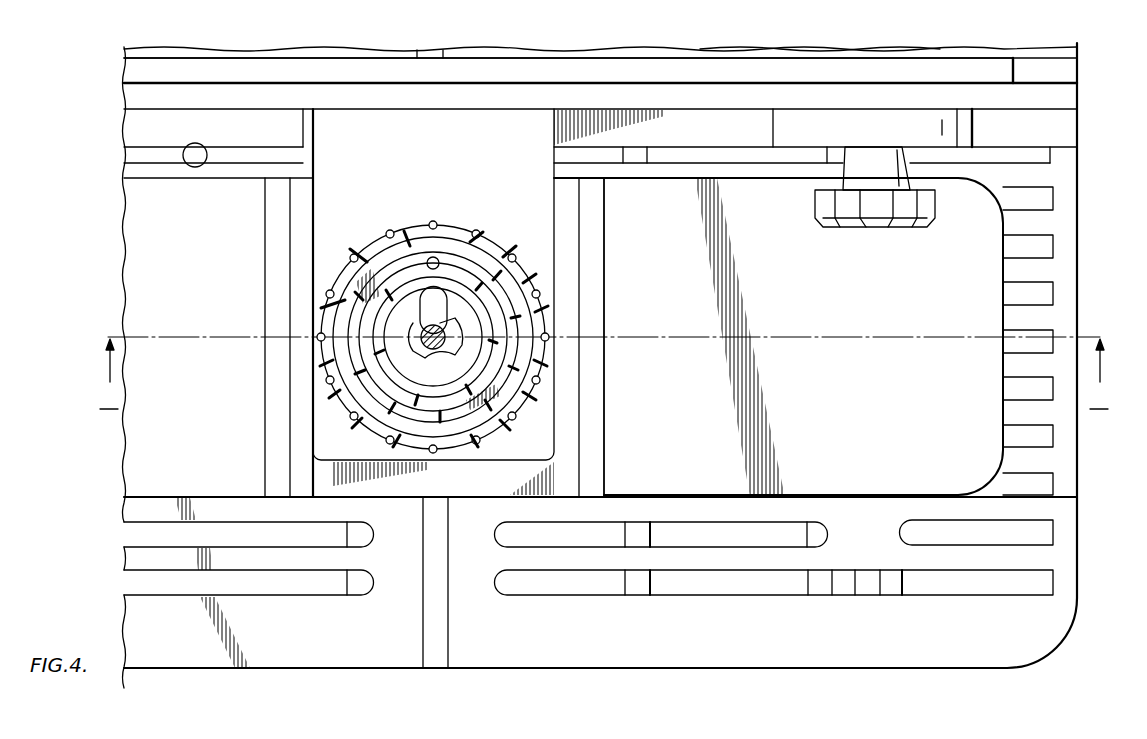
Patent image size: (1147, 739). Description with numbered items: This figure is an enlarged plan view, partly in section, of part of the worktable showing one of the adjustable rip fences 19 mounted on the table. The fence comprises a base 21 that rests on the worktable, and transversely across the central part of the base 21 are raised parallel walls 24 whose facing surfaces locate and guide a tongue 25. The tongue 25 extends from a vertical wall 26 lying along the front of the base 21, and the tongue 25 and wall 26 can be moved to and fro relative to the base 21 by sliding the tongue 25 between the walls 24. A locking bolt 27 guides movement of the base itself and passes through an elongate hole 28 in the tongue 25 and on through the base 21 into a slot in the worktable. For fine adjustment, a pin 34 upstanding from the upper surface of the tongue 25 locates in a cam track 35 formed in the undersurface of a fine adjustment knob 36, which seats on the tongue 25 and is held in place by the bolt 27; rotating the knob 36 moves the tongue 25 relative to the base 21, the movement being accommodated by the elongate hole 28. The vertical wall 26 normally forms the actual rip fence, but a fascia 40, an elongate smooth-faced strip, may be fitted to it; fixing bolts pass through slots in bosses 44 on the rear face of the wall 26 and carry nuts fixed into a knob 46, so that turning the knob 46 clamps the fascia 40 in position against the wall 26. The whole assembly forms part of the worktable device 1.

The indexing device housing 1 is at (1090, 155).
The rip fence 19 is at (985, 275).
The base 21 is at (838, 336).
The raised parallel walls 24 is at (293, 238).
The tongue 25 is at (442, 169).
The vertical wall 26 is at (658, 90).
The locking bolt 27 is at (447, 345).
The elongate hole 28 is at (440, 304).
The pin 34 is at (432, 257).
The cam track 35 is at (380, 265).
The fine adjustment knob 36 is at (473, 267).
The fascia 40 is at (789, 68).
The boss 44 is at (975, 131).
The knob 46 is at (877, 207).